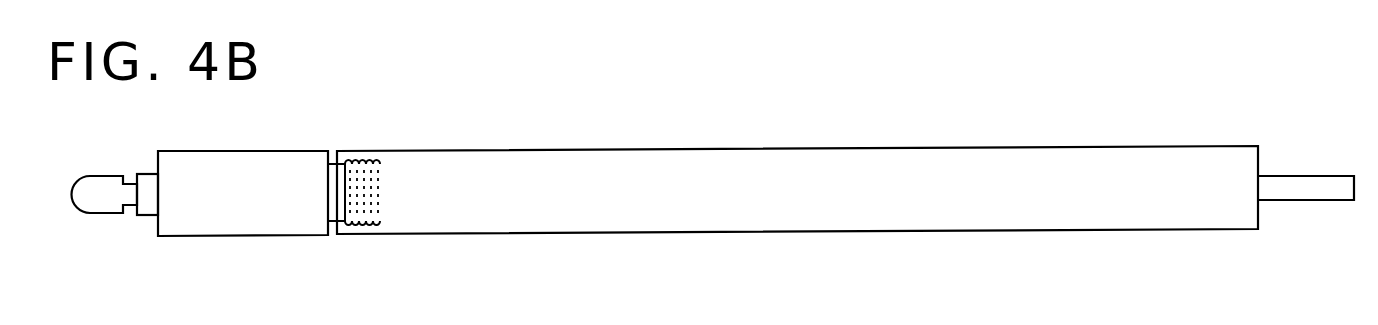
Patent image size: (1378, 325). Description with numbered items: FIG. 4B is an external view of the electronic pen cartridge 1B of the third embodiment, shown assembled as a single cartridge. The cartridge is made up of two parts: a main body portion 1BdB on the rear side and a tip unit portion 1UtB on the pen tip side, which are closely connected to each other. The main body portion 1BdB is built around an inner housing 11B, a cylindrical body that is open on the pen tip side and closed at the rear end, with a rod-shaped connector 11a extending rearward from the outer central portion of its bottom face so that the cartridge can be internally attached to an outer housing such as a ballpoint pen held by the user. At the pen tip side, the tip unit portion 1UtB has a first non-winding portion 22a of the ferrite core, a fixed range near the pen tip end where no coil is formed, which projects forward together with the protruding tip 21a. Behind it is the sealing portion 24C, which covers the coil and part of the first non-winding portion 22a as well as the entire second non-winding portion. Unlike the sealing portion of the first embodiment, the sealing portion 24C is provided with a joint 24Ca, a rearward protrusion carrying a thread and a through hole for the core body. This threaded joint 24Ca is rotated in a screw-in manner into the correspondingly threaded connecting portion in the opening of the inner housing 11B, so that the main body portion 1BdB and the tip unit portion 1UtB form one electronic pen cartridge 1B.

The electronic pen cartridge 1B is at (635, 128).
The tip unit portion 1UtB is at (188, 247).
The main body portion 1BdB is at (873, 319).
The inner housing 11B is at (542, 148).
The rod-shaped connector 11a is at (1307, 175).
The pin terminal 21a is at (102, 188).
The first non-winding portion 22a is at (145, 172).
The sealing portion 24C is at (248, 150).
The joint 24Ca is at (360, 162).